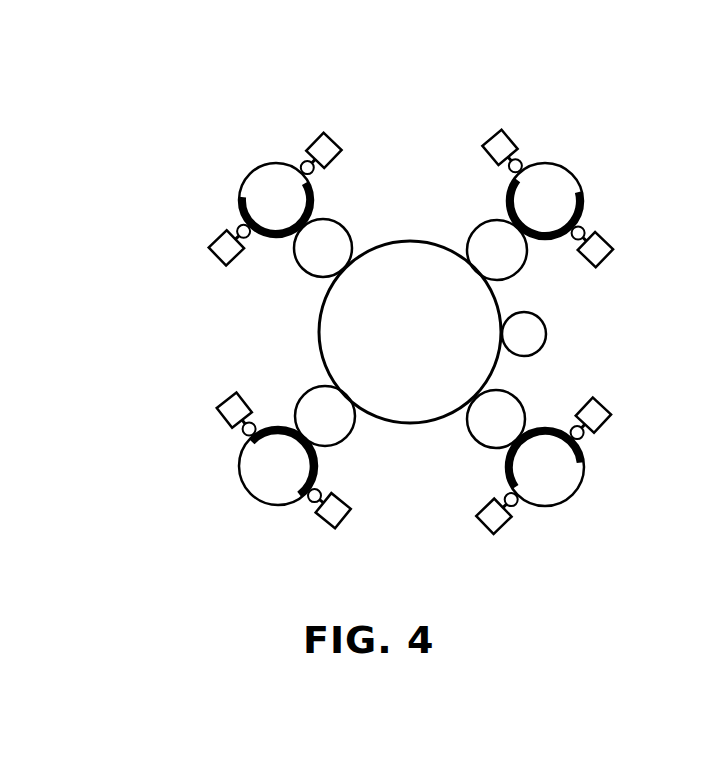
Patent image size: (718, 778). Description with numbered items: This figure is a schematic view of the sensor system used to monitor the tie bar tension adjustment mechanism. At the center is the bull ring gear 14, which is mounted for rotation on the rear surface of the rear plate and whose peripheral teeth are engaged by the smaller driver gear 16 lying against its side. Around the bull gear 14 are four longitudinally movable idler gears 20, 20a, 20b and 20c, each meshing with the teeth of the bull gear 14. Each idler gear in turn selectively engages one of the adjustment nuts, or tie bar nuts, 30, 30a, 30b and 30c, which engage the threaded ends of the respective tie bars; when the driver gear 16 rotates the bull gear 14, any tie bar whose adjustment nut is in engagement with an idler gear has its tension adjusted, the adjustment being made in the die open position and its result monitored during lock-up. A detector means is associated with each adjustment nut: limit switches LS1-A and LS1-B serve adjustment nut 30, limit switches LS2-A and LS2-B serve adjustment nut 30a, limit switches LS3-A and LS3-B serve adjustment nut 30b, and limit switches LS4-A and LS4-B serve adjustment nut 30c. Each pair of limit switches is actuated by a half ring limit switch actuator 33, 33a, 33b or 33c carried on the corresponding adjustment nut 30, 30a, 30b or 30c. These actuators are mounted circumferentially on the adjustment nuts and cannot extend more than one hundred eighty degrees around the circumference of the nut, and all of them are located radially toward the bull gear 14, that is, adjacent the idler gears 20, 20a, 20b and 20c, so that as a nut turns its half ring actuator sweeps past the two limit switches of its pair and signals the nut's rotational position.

The bull ring gear 14 is at (352, 335).
The driver gear 16 is at (535, 334).
The idler gear 20 is at (518, 398).
The idler gear 20a is at (520, 265).
The idler gear 20b is at (335, 238).
The idler gear 20c is at (312, 388).
The adjustment nut 30 is at (555, 490).
The adjustment nut 30a is at (555, 185).
The adjustment nut 30b is at (252, 187).
The adjustment nut 30c is at (268, 485).
The half ring limit switch actuator 33 is at (523, 448).
The half ring limit switch actuator 33a is at (523, 227).
The half ring limit switch actuator 33b is at (287, 222).
The half ring limit switch actuator 33c is at (275, 432).
The limit switch LS1-A is at (498, 528).
The limit switch LS1-B is at (608, 420).
The limit switch LS2-A is at (608, 248).
The limit switch LS2-B is at (511, 113).
The limit switch LS3-A is at (327, 133).
The limit switch LS3-B is at (196, 263).
The limit switch LS4-A is at (218, 408).
The limit switch LS4-B is at (330, 530).